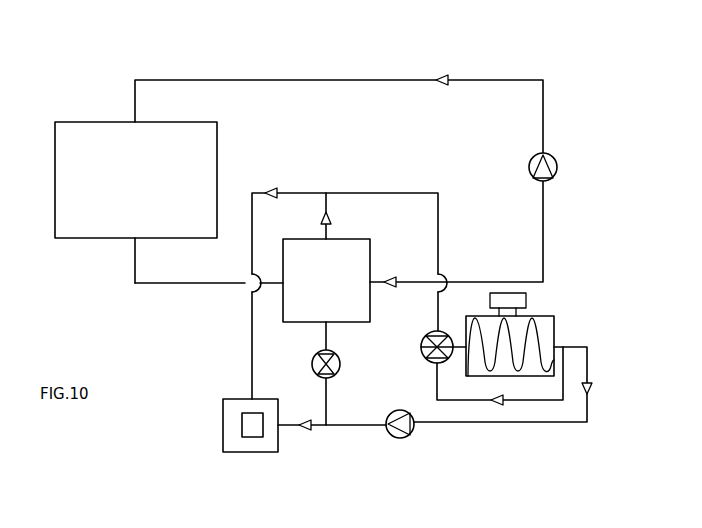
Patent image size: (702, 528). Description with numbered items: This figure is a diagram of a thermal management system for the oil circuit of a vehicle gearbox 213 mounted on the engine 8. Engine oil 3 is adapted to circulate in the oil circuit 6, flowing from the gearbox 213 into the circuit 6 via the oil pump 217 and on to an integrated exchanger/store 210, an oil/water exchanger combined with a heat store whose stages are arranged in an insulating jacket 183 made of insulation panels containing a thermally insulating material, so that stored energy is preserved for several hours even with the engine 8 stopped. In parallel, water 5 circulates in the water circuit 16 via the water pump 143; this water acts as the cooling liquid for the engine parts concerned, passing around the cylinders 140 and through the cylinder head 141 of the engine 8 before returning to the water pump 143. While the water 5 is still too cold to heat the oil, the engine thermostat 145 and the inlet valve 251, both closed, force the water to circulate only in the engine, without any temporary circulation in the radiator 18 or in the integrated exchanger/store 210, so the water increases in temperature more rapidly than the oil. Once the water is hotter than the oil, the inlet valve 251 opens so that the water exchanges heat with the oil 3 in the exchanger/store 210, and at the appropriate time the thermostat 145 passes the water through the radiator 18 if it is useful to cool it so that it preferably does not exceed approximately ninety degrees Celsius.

The vehicle gearbox 213 is at (68, 150).
The engine 8 is at (104, 287).
The engine oil 3 is at (215, 285).
The oil circuit 6 is at (381, 60).
The oil pump 217 is at (553, 158).
The insulating jacket 183 is at (304, 238).
The integrated exchanger/store 210 is at (297, 338).
The inlet valve 251 is at (339, 374).
The engine thermostat 145 is at (422, 338).
The radiator 18 is at (548, 322).
The cylinders 140 is at (253, 427).
The cylinder head 141 is at (240, 445).
The water circuit 16 is at (348, 441).
The water pump 143 is at (401, 438).
The water 5 is at (478, 424).